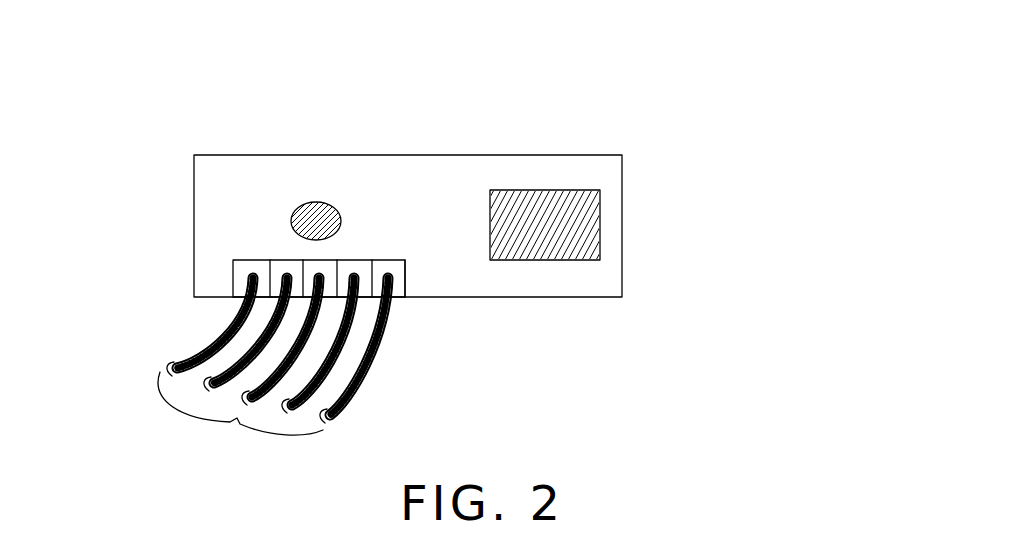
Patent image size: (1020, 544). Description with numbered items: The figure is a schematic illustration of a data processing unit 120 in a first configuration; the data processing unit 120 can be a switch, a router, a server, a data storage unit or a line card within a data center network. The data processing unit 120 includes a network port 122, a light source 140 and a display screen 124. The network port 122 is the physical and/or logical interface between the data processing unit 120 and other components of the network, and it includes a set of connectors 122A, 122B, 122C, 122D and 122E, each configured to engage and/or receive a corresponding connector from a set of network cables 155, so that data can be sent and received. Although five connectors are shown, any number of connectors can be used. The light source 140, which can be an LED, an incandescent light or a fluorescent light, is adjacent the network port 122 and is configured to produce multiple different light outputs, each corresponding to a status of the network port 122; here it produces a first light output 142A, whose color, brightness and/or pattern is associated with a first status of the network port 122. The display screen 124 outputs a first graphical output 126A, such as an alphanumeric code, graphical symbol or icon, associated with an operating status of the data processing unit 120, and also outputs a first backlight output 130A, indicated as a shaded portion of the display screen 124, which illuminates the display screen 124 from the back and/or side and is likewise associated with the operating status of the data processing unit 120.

The data processing unit 120 is at (318, 86).
The network port 122 is at (280, 242).
The connector 122A is at (246, 276).
The connector 122B is at (282, 264).
The connector 122C is at (325, 262).
The connector 122D is at (348, 263).
The connector 122E is at (395, 268).
The display screen 124 is at (595, 159).
The first graphical output 126A is at (585, 210).
The first backlight output 130A is at (593, 245).
The light source 140 is at (310, 167).
The first light output 142A is at (338, 202).
The network cables 155 is at (236, 424).